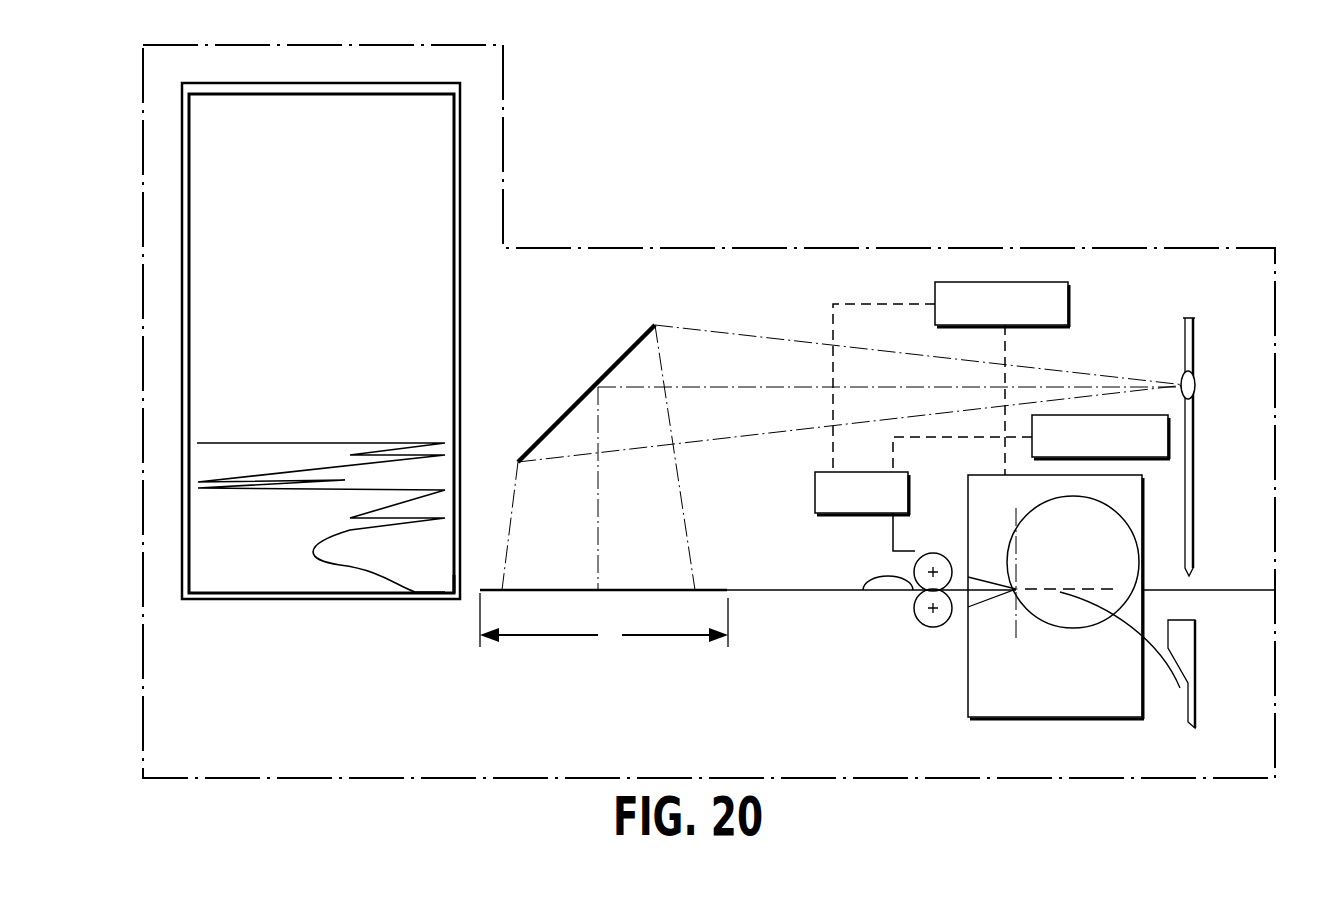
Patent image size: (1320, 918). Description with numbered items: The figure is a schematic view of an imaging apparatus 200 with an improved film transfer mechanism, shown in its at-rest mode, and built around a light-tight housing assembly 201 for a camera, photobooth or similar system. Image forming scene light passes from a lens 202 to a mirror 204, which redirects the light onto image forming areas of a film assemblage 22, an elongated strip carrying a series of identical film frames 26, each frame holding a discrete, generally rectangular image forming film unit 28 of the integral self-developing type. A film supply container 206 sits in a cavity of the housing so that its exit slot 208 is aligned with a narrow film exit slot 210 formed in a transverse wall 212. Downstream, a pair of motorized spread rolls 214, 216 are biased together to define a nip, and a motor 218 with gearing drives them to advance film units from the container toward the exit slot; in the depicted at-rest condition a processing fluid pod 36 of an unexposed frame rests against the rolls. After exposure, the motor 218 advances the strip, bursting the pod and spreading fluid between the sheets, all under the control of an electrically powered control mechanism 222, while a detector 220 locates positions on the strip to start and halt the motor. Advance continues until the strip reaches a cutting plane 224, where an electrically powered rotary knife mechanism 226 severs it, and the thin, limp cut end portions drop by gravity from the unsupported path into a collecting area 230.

The imaging apparatus 200 is at (703, 180).
The light-tight housing assembly 201 is at (891, 248).
The lens 202 is at (1195, 380).
The mirror 204 is at (624, 352).
The film supply container 206 is at (432, 344).
The exit slot 208 is at (462, 585).
The film exit slot 210 is at (1220, 589).
The transverse wall 212 is at (1197, 490).
The spread roll 214 is at (937, 560).
The spread roll 216 is at (940, 625).
The motor 218 is at (814, 491).
The detector 220 is at (1170, 428).
The control mechanism 222 is at (1070, 308).
The cutting plane 224 is at (1012, 537).
The rotary knife mechanism 226 is at (1006, 702).
The collecting area 230 is at (1111, 690).
The film frame 26 is at (653, 481).
The image forming film unit 28 is at (653, 590).
The processing fluid pod 36 is at (878, 578).
The film assemblage 22 is at (805, 606).